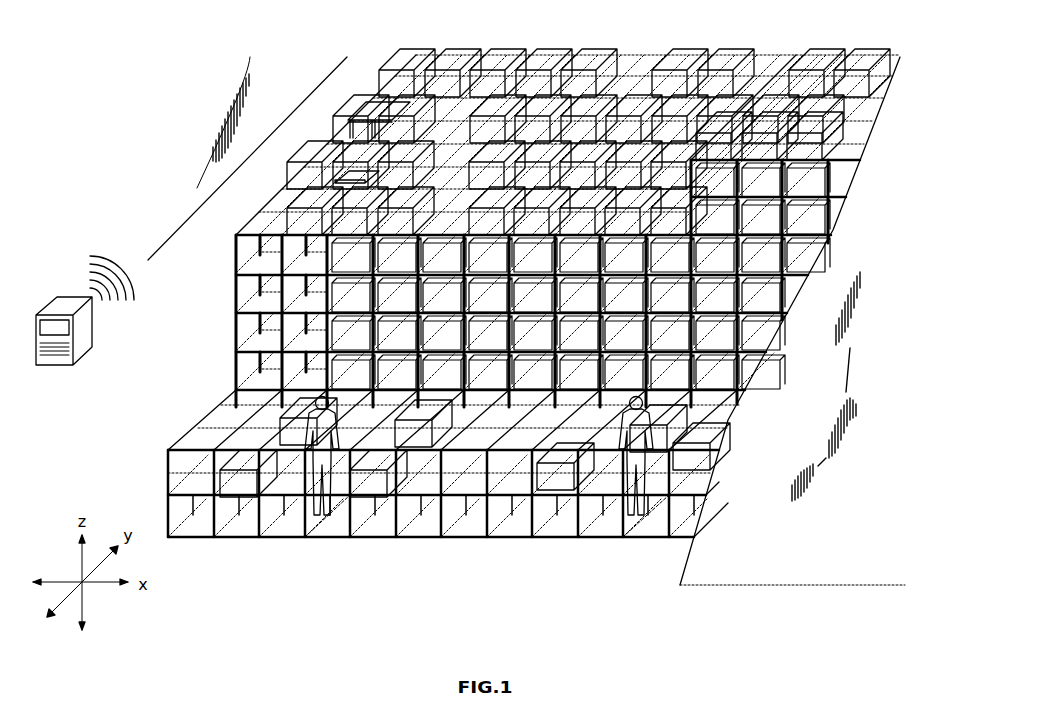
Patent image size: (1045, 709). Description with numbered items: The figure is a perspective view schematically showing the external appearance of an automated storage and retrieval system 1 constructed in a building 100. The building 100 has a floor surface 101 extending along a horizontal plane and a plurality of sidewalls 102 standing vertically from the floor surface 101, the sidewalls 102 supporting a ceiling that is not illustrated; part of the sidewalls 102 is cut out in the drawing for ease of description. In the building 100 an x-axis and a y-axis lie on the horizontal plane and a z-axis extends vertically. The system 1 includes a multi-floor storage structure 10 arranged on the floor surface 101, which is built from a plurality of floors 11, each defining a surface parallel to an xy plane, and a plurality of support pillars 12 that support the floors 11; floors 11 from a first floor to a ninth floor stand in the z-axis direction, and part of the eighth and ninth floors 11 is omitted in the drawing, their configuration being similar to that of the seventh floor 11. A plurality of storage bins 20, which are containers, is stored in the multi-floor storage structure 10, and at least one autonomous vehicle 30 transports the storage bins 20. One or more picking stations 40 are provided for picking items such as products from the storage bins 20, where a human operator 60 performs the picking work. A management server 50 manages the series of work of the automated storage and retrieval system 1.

The automated storage and retrieval system 1 is at (885, 50).
The multi-floor storage structure 10 is at (168, 495).
The floor 11 is at (245, 224).
The support pillar 12 is at (234, 250).
The storage bin 20 is at (545, 72).
The autonomous vehicle 30 is at (372, 116).
The picking station 40 is at (290, 542).
The management server 50 is at (62, 372).
The human operator 60 is at (324, 520).
The building 100 is at (178, 67).
The floor surface 101 is at (147, 382).
The sidewall 102 is at (200, 122).